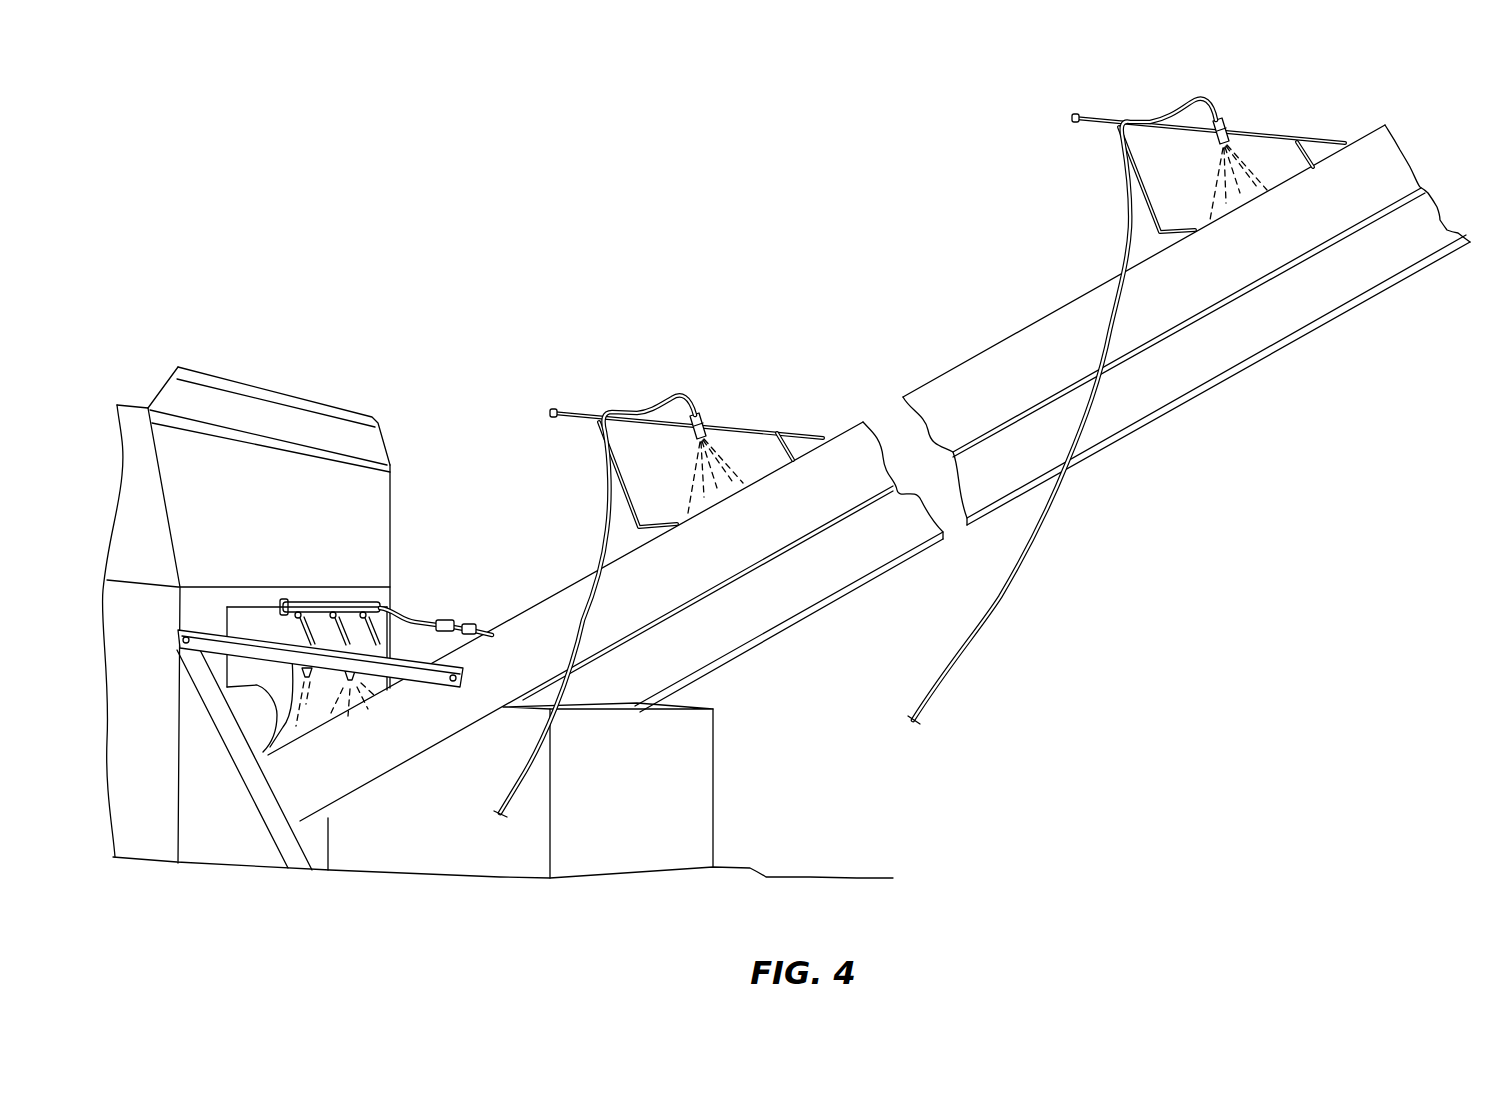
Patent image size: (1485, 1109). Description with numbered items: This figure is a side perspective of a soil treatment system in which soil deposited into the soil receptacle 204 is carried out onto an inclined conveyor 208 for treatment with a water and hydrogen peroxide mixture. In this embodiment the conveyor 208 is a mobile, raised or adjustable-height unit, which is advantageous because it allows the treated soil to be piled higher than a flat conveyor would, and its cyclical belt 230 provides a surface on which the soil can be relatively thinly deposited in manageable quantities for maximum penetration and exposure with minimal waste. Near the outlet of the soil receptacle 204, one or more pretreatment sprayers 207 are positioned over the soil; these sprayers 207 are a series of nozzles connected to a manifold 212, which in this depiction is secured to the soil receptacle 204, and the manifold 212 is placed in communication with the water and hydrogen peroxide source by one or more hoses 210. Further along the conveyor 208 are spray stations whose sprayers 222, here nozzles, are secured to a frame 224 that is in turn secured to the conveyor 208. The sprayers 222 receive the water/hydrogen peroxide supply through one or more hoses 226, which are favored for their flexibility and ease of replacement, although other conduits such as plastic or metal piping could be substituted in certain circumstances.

The soil receptacle 204 is at (290, 423).
The pretreatment sprayers 207 is at (350, 632).
The conveyor 208 is at (858, 452).
The hoses 210 is at (400, 626).
The manifold 212 is at (305, 597).
The sprayers 222 is at (700, 416).
The frame 224 is at (590, 413).
The hoses 226 is at (604, 547).
The cyclical belt 230 is at (783, 588).